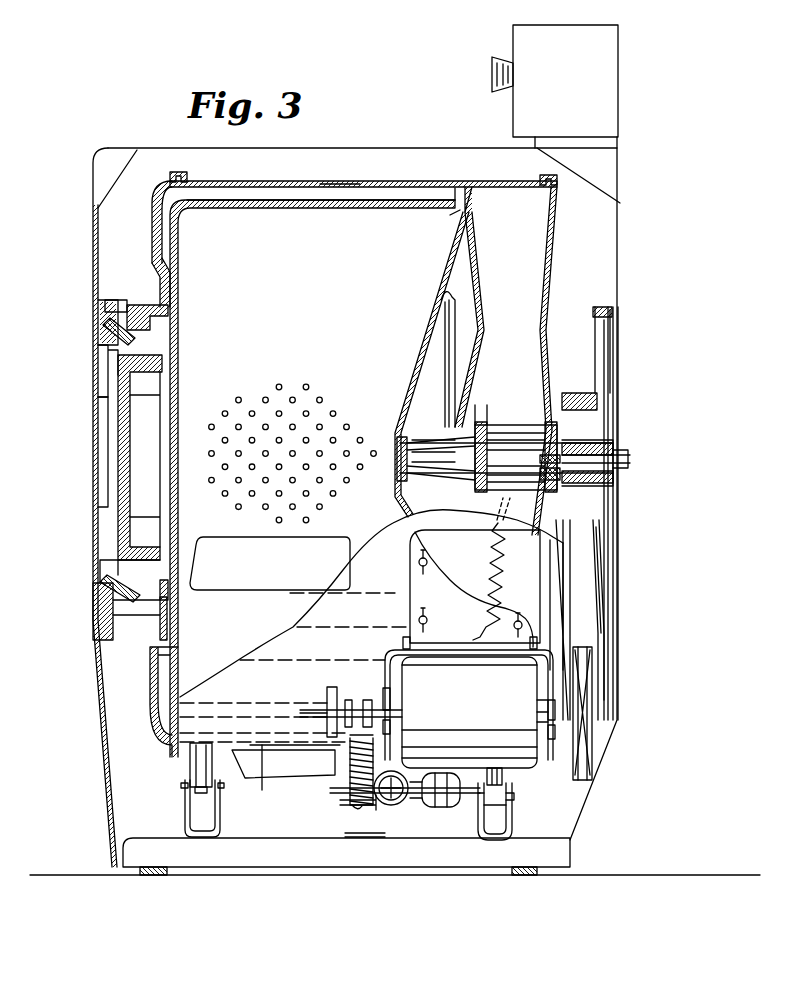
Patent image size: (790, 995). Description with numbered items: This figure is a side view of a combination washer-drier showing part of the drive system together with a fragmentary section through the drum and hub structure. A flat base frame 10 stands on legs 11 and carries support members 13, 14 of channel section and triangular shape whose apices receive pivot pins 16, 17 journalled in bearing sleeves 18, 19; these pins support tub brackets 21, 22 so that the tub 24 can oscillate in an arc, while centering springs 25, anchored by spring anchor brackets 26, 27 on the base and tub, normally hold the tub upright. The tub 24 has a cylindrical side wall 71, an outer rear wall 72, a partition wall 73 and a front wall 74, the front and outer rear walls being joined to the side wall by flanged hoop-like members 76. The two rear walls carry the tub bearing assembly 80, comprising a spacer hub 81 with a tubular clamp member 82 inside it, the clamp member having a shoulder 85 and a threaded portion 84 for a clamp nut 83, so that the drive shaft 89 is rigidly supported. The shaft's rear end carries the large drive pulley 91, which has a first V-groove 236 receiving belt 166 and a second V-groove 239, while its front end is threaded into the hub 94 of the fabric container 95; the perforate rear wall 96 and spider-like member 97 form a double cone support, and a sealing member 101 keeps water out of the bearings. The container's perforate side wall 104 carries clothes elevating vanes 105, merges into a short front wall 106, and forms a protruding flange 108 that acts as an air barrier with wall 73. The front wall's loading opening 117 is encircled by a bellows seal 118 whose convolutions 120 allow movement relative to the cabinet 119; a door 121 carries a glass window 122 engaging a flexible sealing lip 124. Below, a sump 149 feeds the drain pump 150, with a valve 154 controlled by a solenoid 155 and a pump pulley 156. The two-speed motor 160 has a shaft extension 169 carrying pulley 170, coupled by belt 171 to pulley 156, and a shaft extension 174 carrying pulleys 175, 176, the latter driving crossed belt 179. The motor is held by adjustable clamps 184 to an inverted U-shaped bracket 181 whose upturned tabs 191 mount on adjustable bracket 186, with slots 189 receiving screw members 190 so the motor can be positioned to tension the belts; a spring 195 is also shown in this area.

The base frame 10 is at (200, 845).
The legs 11 is at (150, 870).
The support member 13 is at (490, 832).
The support member 14 is at (186, 808).
The pivot pin 16 is at (513, 794).
The pivot pin 17 is at (182, 786).
The bearing sleeve 18 is at (500, 808).
The bearing sleeve 19 is at (204, 798).
The tub bracket 21 is at (507, 780).
The tub bracket 22 is at (188, 770).
The tub 24 is at (155, 748).
The centering spring 25 is at (373, 805).
The spring anchor bracket 26 is at (345, 834).
The spring anchor bracket 27 is at (350, 735).
The cylindrical side wall 71 is at (383, 181).
The outer rear wall 72 is at (555, 240).
The partition wall 73 is at (473, 207).
The front wall 74 is at (152, 240).
The flanged hoop-like members 76 is at (187, 172).
The tub bearing assembly 80 is at (503, 405).
The spacer hub 81 is at (505, 435).
The tubular clamp member 82 is at (478, 405).
The clamp nut 83 is at (553, 462).
The threaded portion 84 is at (565, 475).
The shoulder 85 is at (468, 476).
The drive shaft 89 is at (615, 460).
The drive pulley 91 is at (595, 440).
The hub 94 is at (426, 445).
The fabric container 95 is at (422, 197).
The perforate rear wall 96 is at (432, 262).
The spider-like member 97 is at (443, 355).
The sealing member 101 is at (458, 462).
The perforate cylindrical side wall 104 is at (233, 208).
The clothes elevating vanes 105 is at (232, 538).
The short front wall 106 is at (178, 245).
The protruding flange 108 is at (452, 222).
The loading opening 117 is at (165, 588).
The bellows seal 118 is at (135, 600).
The cabinet 119 is at (93, 250).
The convolutions 120 is at (138, 332).
The door 121 is at (100, 385).
The glass window 122 is at (118, 452).
The sealing lip 124 is at (98, 350).
The sump 149 is at (262, 782).
The drain pump 150 is at (340, 803).
The valve 154 is at (402, 803).
The solenoid 155 is at (450, 808).
The pump pulley 156 is at (345, 785).
The two-speed motor 160 is at (405, 668).
The belt 166 is at (605, 625).
The shaft extension 169 is at (333, 692).
The pulley 170 is at (325, 702).
The belt 171 is at (300, 750).
The shaft extension 174 is at (548, 710).
The pulley 175 is at (594, 740).
The pulley 176 is at (572, 745).
The belt 179 is at (568, 598).
The U-shaped bracket 181 is at (400, 640).
The adjustable clamps 184 is at (384, 700).
The adjustable bracket 186 is at (412, 582).
The slots 189 is at (440, 572).
The screw members 190 is at (428, 540).
The upturned tabs 191 is at (533, 640).
The spring 195 is at (447, 640).
The first V-groove 236 is at (603, 318).
The second V-groove 239 is at (580, 393).